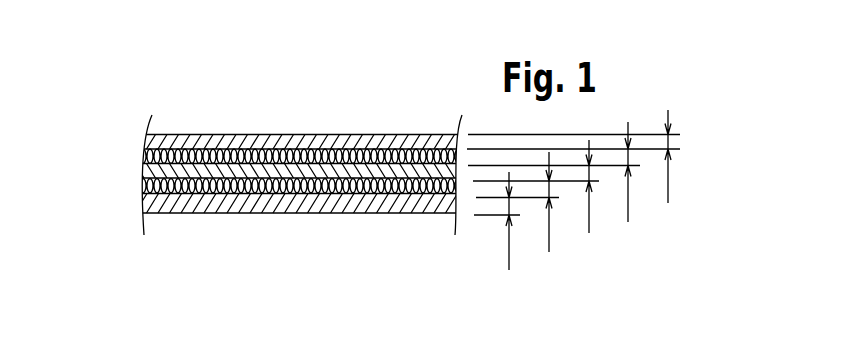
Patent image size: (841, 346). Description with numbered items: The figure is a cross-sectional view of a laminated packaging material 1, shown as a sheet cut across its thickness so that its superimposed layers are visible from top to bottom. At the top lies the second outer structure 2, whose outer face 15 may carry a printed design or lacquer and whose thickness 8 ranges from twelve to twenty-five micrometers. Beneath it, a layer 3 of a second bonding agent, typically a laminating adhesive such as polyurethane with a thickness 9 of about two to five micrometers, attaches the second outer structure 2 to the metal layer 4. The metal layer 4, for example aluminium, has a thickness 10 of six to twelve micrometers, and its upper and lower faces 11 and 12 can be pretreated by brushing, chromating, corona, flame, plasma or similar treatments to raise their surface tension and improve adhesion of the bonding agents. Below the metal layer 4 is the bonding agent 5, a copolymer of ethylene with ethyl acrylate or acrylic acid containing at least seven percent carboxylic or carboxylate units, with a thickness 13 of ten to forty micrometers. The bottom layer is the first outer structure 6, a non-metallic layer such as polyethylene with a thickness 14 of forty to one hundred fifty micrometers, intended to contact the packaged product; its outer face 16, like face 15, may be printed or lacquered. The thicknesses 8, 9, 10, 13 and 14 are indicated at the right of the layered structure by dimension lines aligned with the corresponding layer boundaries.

The material 1 is at (269, 173).
The second outer structure 2 is at (204, 140).
The layer of a second bonding agent 3 is at (146, 158).
The metal layer 4 is at (150, 178).
The bonding agent 5 is at (147, 187).
The first outer structure 6 is at (150, 208).
The thickness of the second outer structure 8 is at (668, 192).
The thickness of the layer of second bonding agent 9 is at (628, 208).
The thickness of the metal layer 10 is at (589, 220).
The face of the metal layer 11 is at (313, 152).
The face of the metal layer 12 is at (318, 185).
The thickness of the bonding agent layer 13 is at (549, 237).
The thickness of the first outer structure 14 is at (509, 252).
The outer face 15 is at (250, 134).
The outer face 16 is at (224, 213).